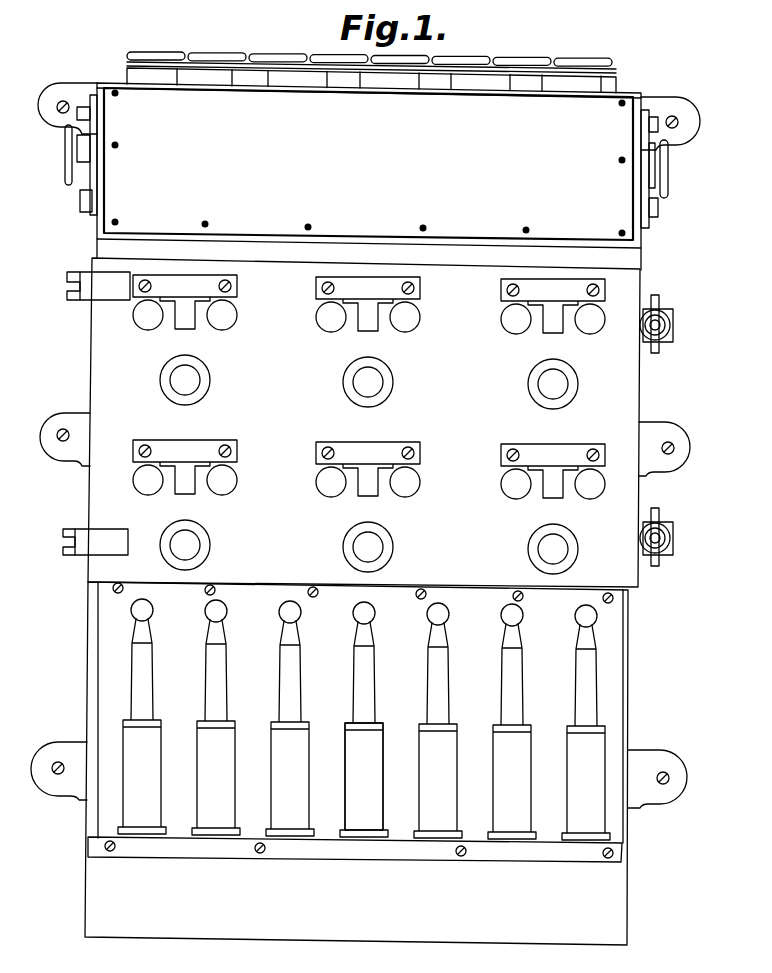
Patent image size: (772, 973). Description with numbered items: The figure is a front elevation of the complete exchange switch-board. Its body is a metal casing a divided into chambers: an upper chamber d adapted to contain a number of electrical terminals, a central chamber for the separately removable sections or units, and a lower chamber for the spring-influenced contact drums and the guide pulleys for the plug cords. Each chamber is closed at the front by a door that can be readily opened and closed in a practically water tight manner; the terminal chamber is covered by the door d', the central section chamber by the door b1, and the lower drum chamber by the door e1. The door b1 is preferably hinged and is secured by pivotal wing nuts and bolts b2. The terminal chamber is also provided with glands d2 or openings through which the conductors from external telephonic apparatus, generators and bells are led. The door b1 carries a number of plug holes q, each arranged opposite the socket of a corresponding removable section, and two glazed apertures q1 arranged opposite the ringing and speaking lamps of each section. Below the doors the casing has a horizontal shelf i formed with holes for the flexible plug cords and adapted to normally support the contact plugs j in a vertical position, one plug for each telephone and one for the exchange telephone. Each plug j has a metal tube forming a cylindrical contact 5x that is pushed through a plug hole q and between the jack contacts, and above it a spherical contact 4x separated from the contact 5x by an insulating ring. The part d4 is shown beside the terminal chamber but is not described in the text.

The upper chamber d is at (369, 168).
The front door of terminal chamber d' is at (368, 164).
The glands d2 is at (370, 76).
The catch d4 is at (97, 216).
The front door of section chamber b1 is at (365, 422).
The pivotal wing nuts and bolts b2 is at (657, 320).
The plug holes q is at (185, 545).
The glazed apertures q1 is at (215, 318).
The metal casing a is at (629, 621).
The front door of drum chamber e1 is at (360, 712).
The horizontal shelf i is at (342, 840).
The spherical plug contact 4x is at (428, 613).
The cylindrical plug contact 5x is at (280, 674).
The contact plug j is at (364, 776).